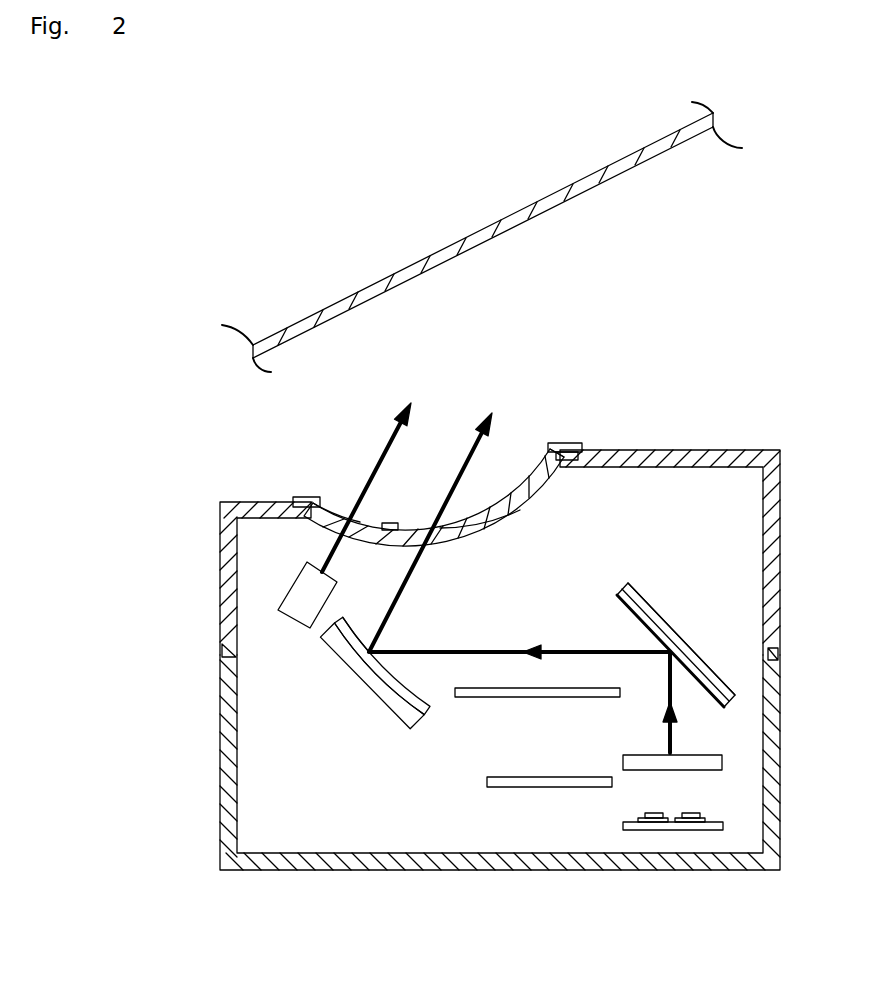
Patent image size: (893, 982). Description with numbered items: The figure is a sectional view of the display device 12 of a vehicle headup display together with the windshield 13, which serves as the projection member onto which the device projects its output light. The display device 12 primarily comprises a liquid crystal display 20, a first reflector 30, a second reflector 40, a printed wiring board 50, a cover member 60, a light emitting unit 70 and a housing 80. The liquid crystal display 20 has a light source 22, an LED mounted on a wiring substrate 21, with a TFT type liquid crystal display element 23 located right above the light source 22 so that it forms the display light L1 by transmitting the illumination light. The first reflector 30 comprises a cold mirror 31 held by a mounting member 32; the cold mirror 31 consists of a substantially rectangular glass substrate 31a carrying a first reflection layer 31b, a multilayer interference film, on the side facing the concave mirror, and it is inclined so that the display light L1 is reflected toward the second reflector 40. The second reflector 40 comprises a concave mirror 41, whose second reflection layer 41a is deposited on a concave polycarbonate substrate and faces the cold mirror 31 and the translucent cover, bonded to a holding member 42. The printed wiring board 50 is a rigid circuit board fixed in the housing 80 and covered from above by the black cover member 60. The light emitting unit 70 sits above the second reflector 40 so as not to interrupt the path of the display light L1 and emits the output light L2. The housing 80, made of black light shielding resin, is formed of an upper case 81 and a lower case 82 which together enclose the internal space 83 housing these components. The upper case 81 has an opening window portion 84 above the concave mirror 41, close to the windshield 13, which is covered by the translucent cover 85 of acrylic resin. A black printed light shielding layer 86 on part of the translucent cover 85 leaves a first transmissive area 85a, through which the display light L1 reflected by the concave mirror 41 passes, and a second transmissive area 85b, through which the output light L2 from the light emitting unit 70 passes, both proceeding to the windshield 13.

The display device 12 is at (629, 390).
The windshield 13 is at (393, 282).
The liquid crystal display 20 is at (733, 833).
The wiring substrate 21 is at (673, 826).
The light source 22 is at (703, 815).
The liquid crystal display element 23 is at (713, 763).
The first reflector 30 is at (734, 627).
The cold mirror 31 is at (734, 627).
The glass substrate 31a is at (668, 647).
The first reflection layer 31b is at (688, 682).
The mounting member 32 is at (714, 668).
The second reflector 40 is at (388, 672).
The concave mirror 41 is at (410, 700).
The second reflection layer 41a is at (350, 630).
The holding member 42 is at (365, 677).
The printed wiring board 50 is at (528, 783).
The cover member 60 is at (473, 697).
The light emitting unit 70 is at (302, 602).
The housing 80 is at (500, 655).
The upper case 81 is at (708, 458).
The lower case 82 is at (500, 862).
The space 83 is at (355, 823).
The opening window portion 84 is at (562, 473).
The translucent cover 85 is at (442, 514).
The first transmissive area 85a is at (482, 530).
The second transmissive area 85b is at (327, 520).
The light shielding layer 86 is at (298, 498).
The display light L1 is at (470, 647).
The output light L2 is at (388, 449).